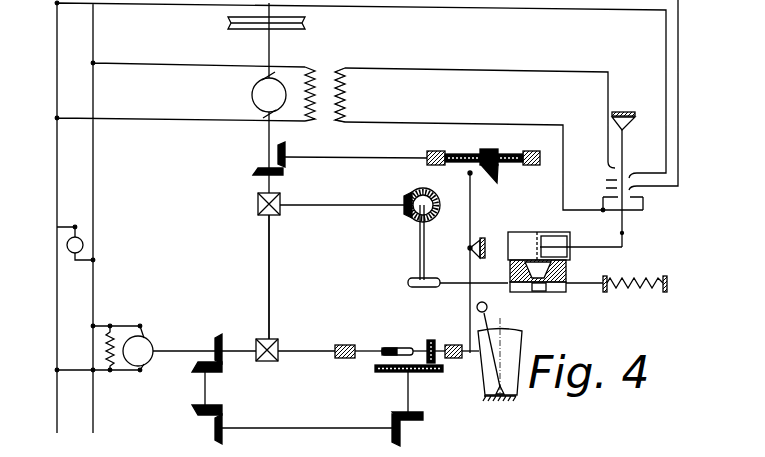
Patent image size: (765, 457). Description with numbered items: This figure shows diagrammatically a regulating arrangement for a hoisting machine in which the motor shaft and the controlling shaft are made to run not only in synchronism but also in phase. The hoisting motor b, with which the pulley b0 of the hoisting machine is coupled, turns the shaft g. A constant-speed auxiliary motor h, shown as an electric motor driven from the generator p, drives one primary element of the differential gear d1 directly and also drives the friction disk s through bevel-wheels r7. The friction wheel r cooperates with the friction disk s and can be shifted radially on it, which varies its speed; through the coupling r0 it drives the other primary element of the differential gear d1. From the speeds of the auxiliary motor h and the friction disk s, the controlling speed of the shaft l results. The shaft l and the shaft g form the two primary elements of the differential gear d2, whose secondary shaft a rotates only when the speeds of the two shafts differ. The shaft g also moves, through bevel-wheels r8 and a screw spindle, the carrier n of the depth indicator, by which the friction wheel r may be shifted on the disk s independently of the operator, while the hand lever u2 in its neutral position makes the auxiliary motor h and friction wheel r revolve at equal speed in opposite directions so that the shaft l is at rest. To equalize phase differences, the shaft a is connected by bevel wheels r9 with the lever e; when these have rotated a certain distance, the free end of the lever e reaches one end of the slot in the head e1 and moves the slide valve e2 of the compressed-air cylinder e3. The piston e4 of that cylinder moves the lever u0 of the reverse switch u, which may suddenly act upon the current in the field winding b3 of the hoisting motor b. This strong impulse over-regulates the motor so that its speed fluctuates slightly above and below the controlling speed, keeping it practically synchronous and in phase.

The pulley b0 is at (307, 27).
The hoisting motor b is at (252, 92).
The field winding b3 is at (342, 98).
The shaft g is at (268, 146).
The bevel-wheels r8 is at (282, 175).
The carrier n is at (497, 183).
The differential gear d2 is at (258, 205).
The controlling shaft l is at (267, 262).
The secondary shaft a is at (366, 207).
The bevel wheels r9 is at (406, 212).
The lever e is at (419, 246).
The head e1 is at (410, 288).
The compressed-air cylinder e3 is at (510, 234).
The piston e4 is at (538, 232).
The slide valve e2 is at (538, 293).
The reverse switch u is at (641, 179).
The lever of reverse switch u0 is at (624, 233).
The generator p is at (84, 244).
The auxiliary motor h is at (141, 360).
The bevel-wheels r7 is at (212, 412).
The differential gear d1 is at (267, 364).
The coupling r0 is at (390, 350).
The friction wheel r is at (433, 343).
The friction disk s is at (420, 371).
The hand lever u2 is at (484, 395).